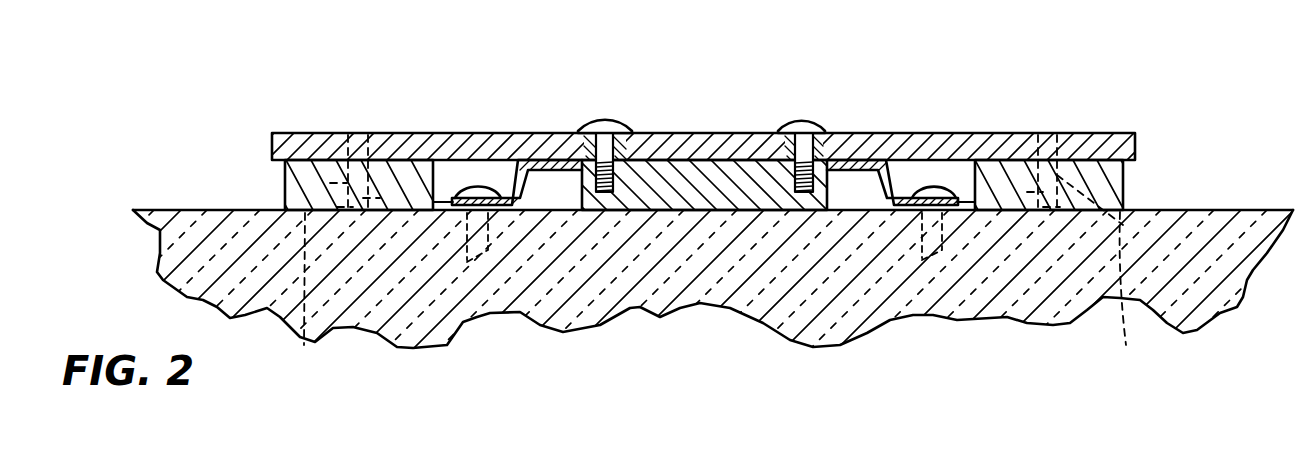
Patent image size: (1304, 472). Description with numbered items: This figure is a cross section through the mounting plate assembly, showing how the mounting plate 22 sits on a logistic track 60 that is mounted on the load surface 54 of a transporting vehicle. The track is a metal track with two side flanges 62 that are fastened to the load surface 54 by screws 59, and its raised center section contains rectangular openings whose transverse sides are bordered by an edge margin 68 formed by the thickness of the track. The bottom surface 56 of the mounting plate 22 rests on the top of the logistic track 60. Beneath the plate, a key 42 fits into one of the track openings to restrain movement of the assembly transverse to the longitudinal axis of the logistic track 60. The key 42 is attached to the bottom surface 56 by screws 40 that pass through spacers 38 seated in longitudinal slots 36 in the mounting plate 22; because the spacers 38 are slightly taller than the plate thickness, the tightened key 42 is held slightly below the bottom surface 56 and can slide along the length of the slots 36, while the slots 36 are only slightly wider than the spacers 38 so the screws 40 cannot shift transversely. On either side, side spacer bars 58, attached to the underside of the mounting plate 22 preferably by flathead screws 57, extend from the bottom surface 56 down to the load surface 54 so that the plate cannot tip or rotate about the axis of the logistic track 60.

The mounting plate 22 is at (320, 143).
The slots 36 is at (586, 155).
The spacers 38 is at (640, 133).
The screws 40 is at (612, 127).
The key 42 is at (700, 193).
The load surface 54 is at (206, 210).
The bottom surface 56 is at (413, 160).
The flathead screws 57 is at (302, 346).
The side spacer bars 58 is at (297, 188).
The screws 59 is at (523, 190).
The logistic track 60 is at (477, 188).
The side flanges 62 is at (432, 201).
The edge margin 68 is at (575, 156).